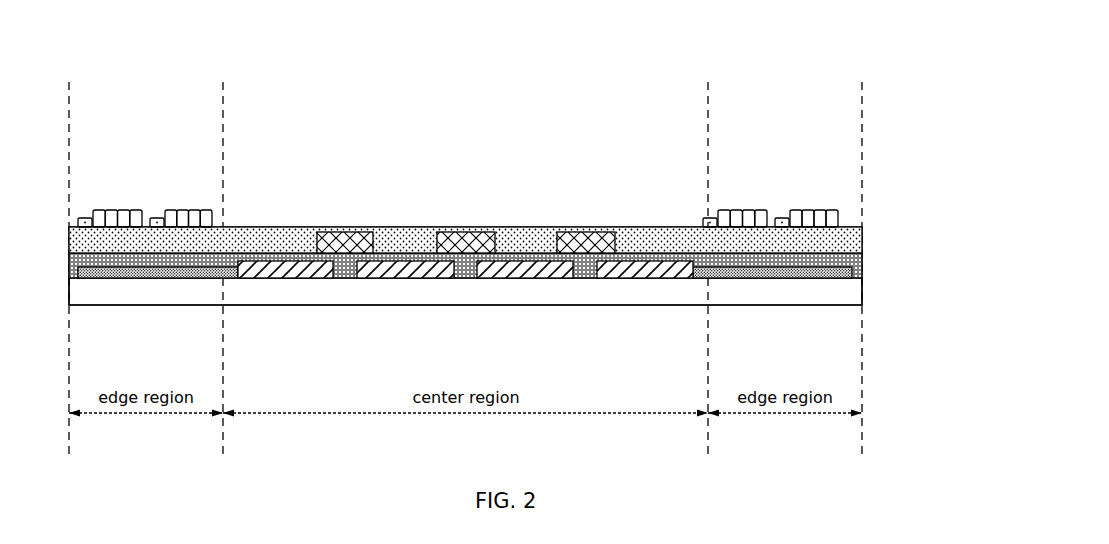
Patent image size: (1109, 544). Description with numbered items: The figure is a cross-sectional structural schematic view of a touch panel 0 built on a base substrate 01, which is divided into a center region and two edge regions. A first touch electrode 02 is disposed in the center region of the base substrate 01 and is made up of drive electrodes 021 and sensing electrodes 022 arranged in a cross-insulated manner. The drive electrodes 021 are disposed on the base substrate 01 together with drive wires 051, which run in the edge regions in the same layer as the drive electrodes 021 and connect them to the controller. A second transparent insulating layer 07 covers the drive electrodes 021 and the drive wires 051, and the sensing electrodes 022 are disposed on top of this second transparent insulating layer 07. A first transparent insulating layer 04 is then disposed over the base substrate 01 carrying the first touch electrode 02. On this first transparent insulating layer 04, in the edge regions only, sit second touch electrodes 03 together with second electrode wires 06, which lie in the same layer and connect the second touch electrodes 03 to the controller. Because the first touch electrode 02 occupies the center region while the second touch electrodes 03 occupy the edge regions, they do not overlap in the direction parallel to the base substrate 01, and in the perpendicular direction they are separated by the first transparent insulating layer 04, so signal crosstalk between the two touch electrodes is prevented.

The touch panel 0 is at (477, 41).
The base substrate 01 is at (864, 294).
The first touch electrode 02 is at (465, 190).
The drive electrode 021 is at (513, 267).
The sensing electrode 022 is at (466, 237).
The second touch electrode 03 is at (833, 217).
The first transparent insulating layer 04 is at (843, 237).
The drive wire 051 is at (742, 272).
The second electrode wire 06 is at (782, 217).
The second transparent insulating layer 07 is at (855, 257).